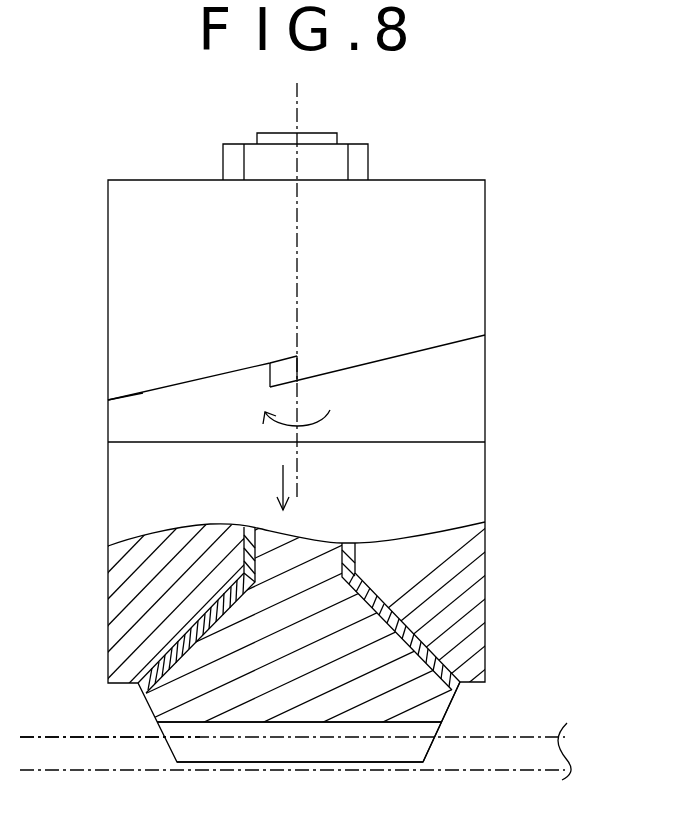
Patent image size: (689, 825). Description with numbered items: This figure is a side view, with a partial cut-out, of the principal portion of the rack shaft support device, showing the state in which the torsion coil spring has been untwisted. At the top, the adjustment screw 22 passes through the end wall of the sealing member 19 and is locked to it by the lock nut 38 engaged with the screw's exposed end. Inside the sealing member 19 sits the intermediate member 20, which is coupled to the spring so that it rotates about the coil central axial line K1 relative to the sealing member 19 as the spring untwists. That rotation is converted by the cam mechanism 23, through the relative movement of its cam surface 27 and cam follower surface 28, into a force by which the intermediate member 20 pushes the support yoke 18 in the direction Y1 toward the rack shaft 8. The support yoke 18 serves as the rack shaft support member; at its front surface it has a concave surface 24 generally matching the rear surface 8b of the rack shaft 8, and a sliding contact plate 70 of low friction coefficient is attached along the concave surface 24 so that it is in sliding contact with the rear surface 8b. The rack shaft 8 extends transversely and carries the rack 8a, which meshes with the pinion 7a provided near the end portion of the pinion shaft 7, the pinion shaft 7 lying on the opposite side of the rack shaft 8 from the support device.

The coil central axial line K1 is at (294, 113).
The direction of pushing Y1 is at (282, 482).
The adjustment screw 22 is at (322, 131).
The lock nut 38 is at (223, 165).
The sealing member 19 is at (488, 245).
The intermediate member 20 is at (488, 386).
The cam mechanism 23 is at (311, 358).
The cam follower surface 28 is at (407, 352).
The cam surface 27 is at (438, 349).
The support yoke 18 is at (488, 475).
The sliding contact plate 70 is at (203, 621).
The rear surface of the rack shaft 8b is at (400, 612).
The concave surface 24 is at (408, 622).
The rack shaft 8 is at (450, 710).
The rack 8a is at (302, 764).
The pinion shaft 7 is at (540, 735).
The pinion 7a is at (62, 736).